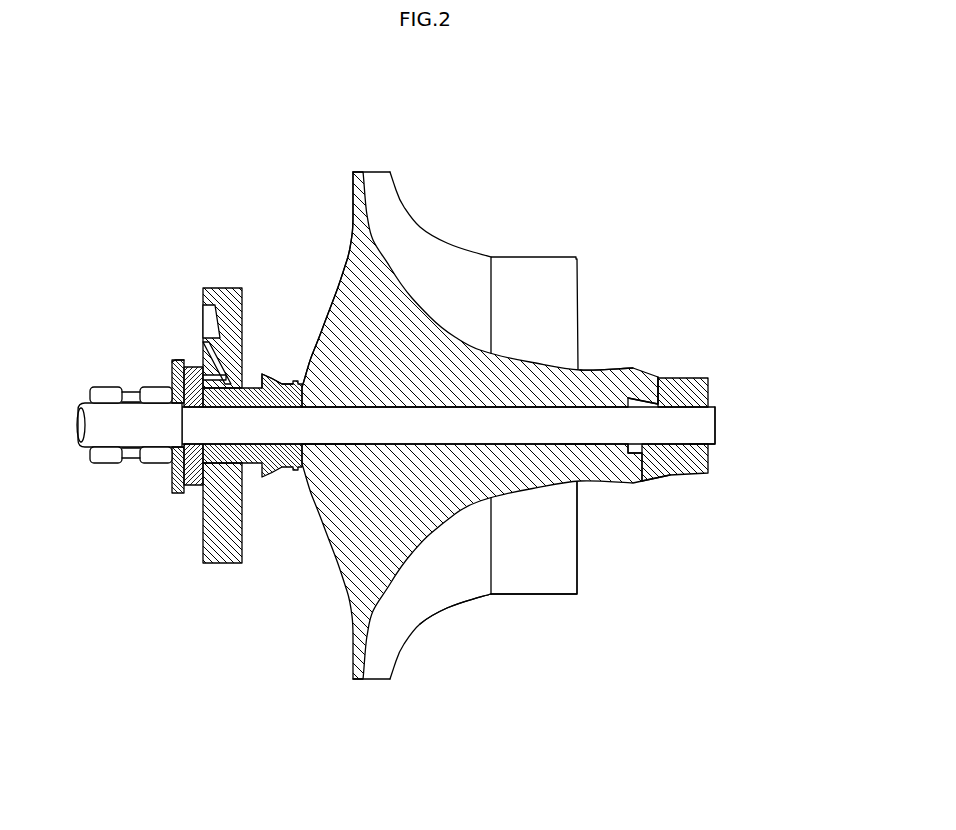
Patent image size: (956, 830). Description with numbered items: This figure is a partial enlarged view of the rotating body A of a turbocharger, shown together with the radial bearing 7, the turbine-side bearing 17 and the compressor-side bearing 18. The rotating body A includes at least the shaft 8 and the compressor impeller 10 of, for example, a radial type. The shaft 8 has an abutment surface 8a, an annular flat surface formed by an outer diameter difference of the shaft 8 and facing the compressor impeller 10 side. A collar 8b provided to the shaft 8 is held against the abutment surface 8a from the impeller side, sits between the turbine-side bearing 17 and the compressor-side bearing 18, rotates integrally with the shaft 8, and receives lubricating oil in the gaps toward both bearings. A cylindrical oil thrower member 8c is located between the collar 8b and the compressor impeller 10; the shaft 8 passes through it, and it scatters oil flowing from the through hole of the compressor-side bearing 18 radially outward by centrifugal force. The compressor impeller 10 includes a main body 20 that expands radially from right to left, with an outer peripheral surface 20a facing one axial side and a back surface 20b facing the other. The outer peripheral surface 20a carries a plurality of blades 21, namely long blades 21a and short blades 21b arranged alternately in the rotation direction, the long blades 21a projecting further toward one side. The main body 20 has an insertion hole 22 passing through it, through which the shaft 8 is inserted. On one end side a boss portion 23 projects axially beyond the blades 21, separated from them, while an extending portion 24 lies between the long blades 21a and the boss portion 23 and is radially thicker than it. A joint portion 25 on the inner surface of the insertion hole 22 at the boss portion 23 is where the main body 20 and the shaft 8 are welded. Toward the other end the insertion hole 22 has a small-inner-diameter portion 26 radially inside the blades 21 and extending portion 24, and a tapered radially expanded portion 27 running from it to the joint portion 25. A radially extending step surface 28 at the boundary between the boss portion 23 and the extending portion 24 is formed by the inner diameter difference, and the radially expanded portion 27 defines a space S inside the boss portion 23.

The compressor impeller 10 is at (497, 151).
The rotating body A is at (215, 151).
The main body 20 is at (355, 172).
The outer peripheral surface 20a is at (388, 267).
The back surface 20b is at (350, 248).
The blades 21 is at (450, 660).
The long blades 21a is at (550, 596).
The short blades 21b is at (472, 603).
The insertion hole 22 is at (353, 445).
The boss portion 23 is at (697, 378).
The extending portion 24 is at (605, 368).
The space S is at (654, 404).
The joint portion 25 is at (693, 446).
The small-inner-diameter portion 26 is at (563, 445).
The radially expanded portion 27 is at (677, 458).
The step surface 28 is at (668, 447).
The compressor-side bearing 18 is at (223, 563).
The turbine-side bearing 17 is at (177, 493).
The shaft 8 is at (83, 447).
The radial bearing 7 is at (117, 465).
The abutment surface 8a is at (172, 361).
The collar 8b is at (193, 367).
The oil thrower member 8c is at (275, 377).